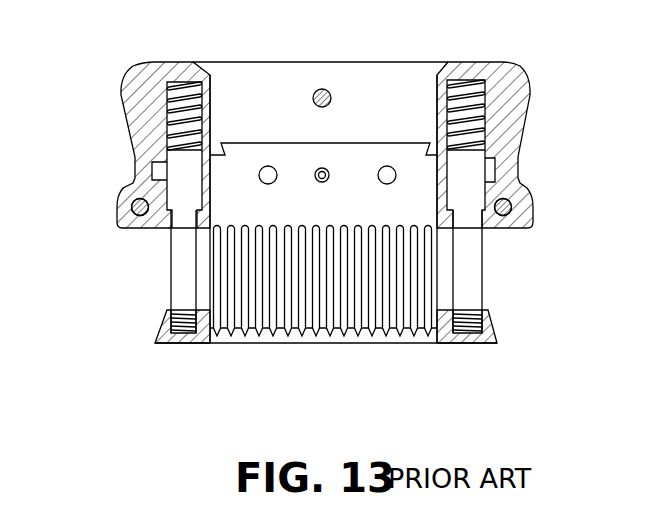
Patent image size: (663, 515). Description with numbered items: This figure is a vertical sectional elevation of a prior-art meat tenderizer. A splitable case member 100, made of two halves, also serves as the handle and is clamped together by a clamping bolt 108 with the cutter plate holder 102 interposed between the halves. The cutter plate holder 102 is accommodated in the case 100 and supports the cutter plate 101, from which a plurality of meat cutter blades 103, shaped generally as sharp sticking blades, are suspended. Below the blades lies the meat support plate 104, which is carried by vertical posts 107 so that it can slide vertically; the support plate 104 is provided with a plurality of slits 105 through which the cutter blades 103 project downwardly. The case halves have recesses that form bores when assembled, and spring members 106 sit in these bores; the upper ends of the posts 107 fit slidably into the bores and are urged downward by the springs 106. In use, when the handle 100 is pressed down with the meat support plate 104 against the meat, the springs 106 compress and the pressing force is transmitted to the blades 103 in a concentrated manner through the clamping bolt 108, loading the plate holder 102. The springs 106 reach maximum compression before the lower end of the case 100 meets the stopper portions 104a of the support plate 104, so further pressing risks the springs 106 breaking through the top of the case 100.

The splitable case member 100 is at (516, 167).
The cutter plate 101 is at (417, 210).
The cutter plate holder 102 is at (487, 122).
The meat cutter blades 103 is at (368, 336).
The meat support plate 104 is at (483, 344).
The stopper portions 104a is at (167, 312).
The slits 105 is at (322, 340).
The spring members 106 is at (168, 88).
The vertical posts 107 is at (172, 238).
The clamping bolt 108 is at (319, 88).